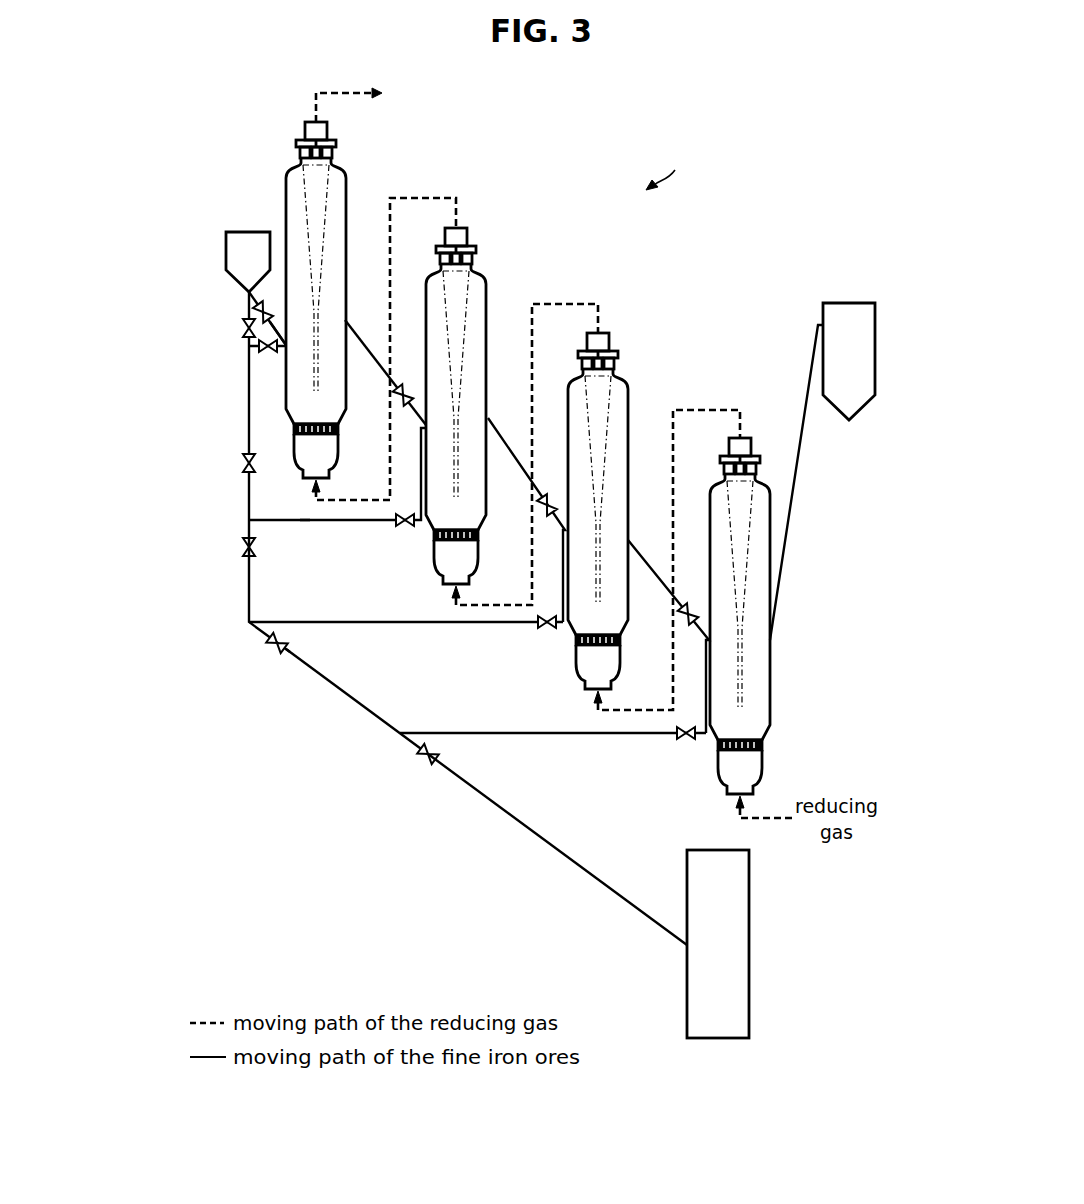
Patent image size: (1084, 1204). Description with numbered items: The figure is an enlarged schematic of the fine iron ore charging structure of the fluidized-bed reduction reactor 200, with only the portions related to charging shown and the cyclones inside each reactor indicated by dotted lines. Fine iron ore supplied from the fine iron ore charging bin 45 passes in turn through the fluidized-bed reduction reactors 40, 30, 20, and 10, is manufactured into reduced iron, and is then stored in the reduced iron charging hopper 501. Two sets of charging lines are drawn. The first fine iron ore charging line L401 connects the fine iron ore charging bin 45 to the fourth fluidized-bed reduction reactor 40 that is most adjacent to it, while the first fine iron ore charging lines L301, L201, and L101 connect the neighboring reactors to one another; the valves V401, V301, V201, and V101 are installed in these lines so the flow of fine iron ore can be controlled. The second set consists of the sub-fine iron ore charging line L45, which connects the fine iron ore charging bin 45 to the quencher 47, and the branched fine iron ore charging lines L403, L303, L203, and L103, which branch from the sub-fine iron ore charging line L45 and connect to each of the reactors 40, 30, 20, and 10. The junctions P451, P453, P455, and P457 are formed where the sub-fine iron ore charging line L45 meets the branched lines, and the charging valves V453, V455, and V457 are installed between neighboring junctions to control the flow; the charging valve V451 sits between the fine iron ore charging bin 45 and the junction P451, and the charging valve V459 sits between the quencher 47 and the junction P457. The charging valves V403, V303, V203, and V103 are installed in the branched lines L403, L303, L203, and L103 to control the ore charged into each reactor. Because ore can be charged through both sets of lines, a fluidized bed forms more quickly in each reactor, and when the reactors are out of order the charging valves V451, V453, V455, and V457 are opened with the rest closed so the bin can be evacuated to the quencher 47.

The fluidized-bed reduction reactor 200 is at (669, 169).
The fluidized-bed reduction reactor 10 is at (785, 470).
The fluidized-bed reduction reactor 20 is at (628, 375).
The fluidized-bed reduction reactor 30 is at (488, 268).
The fourth fluidized-bed reduction reactor 40 is at (347, 159).
The fine iron ore charging bin 45 is at (245, 233).
The quencher 47 is at (749, 971).
The reduced iron charging hopper 501 is at (852, 303).
The first fine iron ore charging line L401 is at (252, 298).
The valve V401 is at (257, 316).
The branched fine iron ore charging line L403 is at (279, 340).
The charging valve V403 is at (266, 353).
The charging valve V451 is at (242, 330).
The junction P451 is at (249, 346).
The charging valve V453 is at (242, 464).
The junction P453 is at (249, 520).
The charging valve V455 is at (242, 548).
The junction P455 is at (249, 622).
The charging valve V457 is at (282, 653).
The junction P457 is at (400, 736).
The charging valve V459 is at (428, 766).
The sub-fine iron ore charging line L45 is at (607, 889).
The first fine iron ore charging line L301 is at (368, 349).
The valve V301 is at (400, 390).
The branched fine iron ore charging line L303 is at (308, 521).
The charging valve V303 is at (404, 523).
The first fine iron ore charging line L201 is at (524, 470).
The valve V201 is at (548, 499).
The branched fine iron ore charging line L203 is at (398, 623).
The charging valve V203 is at (548, 627).
The first fine iron ore charging line L101 is at (651, 565).
The valve V101 is at (690, 603).
The branched fine iron ore charging line L103 is at (590, 734).
The charging valve V103 is at (684, 739).